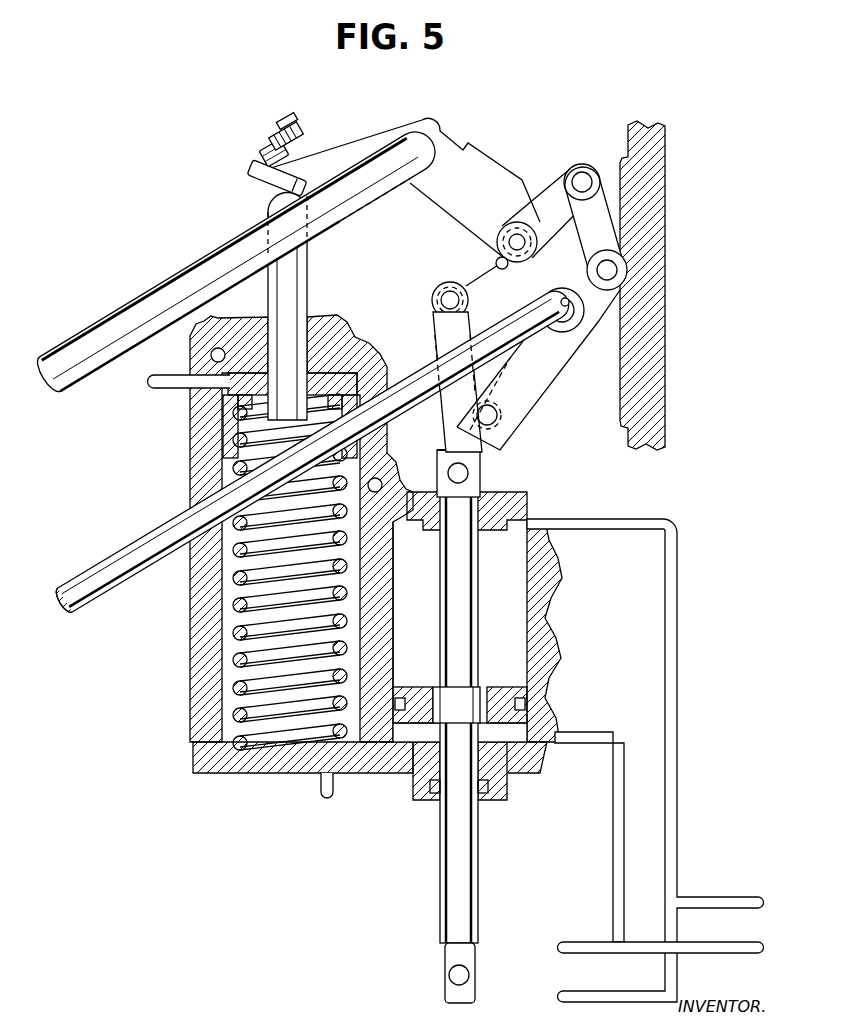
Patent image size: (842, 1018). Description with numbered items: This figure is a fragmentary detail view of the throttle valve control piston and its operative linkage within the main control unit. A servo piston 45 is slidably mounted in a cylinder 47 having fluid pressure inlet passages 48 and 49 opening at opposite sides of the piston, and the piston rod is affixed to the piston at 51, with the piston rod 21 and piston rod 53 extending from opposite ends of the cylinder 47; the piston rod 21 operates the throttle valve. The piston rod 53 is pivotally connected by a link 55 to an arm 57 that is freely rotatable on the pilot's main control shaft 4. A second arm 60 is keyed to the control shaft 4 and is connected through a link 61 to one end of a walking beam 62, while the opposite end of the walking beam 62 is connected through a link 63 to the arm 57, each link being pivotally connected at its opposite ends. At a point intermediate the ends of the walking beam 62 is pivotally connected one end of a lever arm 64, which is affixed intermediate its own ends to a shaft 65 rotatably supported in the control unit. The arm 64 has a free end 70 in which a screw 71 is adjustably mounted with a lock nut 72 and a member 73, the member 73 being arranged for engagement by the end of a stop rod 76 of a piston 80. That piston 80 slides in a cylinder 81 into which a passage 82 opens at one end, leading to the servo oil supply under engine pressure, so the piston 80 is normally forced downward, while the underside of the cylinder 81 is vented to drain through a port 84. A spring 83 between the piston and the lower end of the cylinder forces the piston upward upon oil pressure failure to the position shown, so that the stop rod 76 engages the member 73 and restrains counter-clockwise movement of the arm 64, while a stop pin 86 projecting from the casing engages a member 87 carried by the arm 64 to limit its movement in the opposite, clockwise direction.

The main control shaft 4 is at (76, 586).
The piston rod 21 is at (440, 890).
The servo piston 45 is at (503, 684).
The cylinder 47 is at (554, 600).
The fluid pressure inlet passage 48 is at (600, 521).
The fluid pressure inlet passage 49 is at (580, 744).
The piston rod attachment 51 is at (465, 713).
The piston rod 53 is at (483, 490).
The link 55 is at (462, 441).
The arm 57 is at (516, 394).
The second arm 60 is at (588, 272).
The link 61 is at (610, 222).
The walking beam 62 is at (541, 196).
The link 63 is at (452, 338).
The lever arm 64 is at (440, 205).
The shaft 65 is at (132, 300).
The free end 70 is at (261, 148).
The screw 71 is at (292, 119).
The lock nut 72 is at (272, 136).
The member 73 is at (246, 178).
The stop rod 76 is at (278, 200).
The piston 80 is at (222, 425).
The cylinder 81 is at (218, 566).
The passage 82 is at (167, 374).
The spring 83 is at (218, 645).
The port 84 is at (334, 781).
The stop pin 86 is at (497, 266).
The member 87 is at (506, 232).